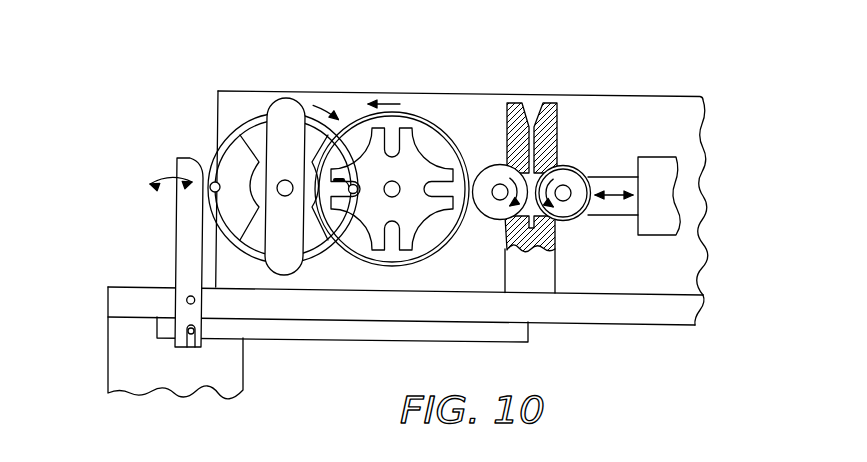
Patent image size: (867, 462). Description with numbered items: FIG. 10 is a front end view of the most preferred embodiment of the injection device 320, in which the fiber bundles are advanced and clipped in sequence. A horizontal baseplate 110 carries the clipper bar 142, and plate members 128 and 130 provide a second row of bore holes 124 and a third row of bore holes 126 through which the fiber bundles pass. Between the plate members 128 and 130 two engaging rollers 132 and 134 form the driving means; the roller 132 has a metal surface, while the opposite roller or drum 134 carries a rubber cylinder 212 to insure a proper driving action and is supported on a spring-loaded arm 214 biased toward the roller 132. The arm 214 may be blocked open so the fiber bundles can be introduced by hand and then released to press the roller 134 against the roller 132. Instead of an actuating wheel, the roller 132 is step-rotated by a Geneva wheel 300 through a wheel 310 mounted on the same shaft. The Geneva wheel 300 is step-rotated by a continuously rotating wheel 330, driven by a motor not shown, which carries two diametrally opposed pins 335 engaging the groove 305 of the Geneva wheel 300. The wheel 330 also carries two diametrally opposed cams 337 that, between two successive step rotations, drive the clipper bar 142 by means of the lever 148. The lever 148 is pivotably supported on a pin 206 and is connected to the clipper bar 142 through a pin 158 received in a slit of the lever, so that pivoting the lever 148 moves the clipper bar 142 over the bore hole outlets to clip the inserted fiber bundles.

The baseplate 110 is at (670, 318).
The second row of bore holes 124 is at (515, 243).
The third row of bore holes 126 is at (537, 103).
The plate member 128 is at (513, 278).
The plate member 130 is at (552, 128).
The driven roller 132 is at (483, 170).
The roller 134 is at (568, 170).
The clipper bar 142 is at (305, 333).
The lever 148 is at (188, 213).
The pin 158 is at (190, 341).
The pin 206 is at (190, 296).
The rubber cylinder 212 is at (571, 221).
The spring-loaded arm 214 is at (610, 183).
The Geneva wheel 300 is at (401, 167).
The groove 305 is at (402, 235).
The wheel 310 is at (432, 137).
The injection device 320 is at (622, 88).
The continuous rotating wheel 330 is at (243, 133).
The pins 335 is at (349, 184).
The cams 337 is at (286, 100).